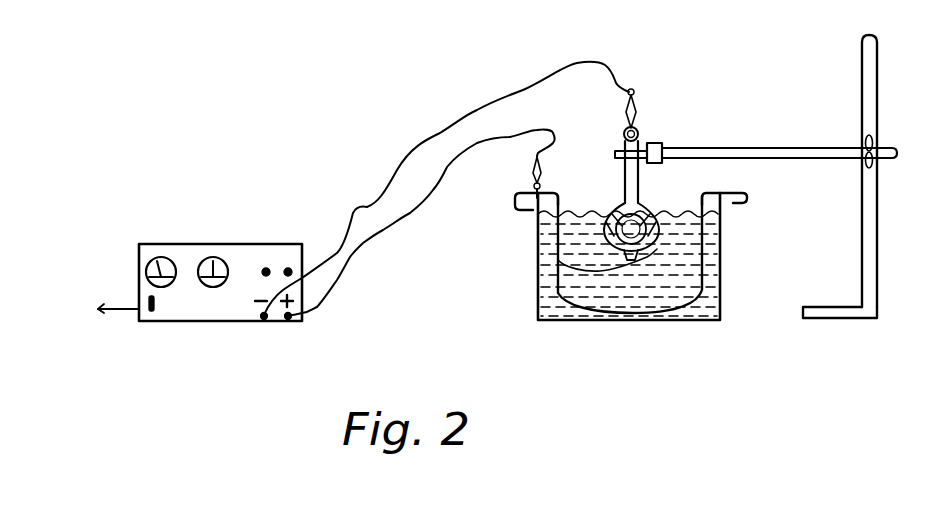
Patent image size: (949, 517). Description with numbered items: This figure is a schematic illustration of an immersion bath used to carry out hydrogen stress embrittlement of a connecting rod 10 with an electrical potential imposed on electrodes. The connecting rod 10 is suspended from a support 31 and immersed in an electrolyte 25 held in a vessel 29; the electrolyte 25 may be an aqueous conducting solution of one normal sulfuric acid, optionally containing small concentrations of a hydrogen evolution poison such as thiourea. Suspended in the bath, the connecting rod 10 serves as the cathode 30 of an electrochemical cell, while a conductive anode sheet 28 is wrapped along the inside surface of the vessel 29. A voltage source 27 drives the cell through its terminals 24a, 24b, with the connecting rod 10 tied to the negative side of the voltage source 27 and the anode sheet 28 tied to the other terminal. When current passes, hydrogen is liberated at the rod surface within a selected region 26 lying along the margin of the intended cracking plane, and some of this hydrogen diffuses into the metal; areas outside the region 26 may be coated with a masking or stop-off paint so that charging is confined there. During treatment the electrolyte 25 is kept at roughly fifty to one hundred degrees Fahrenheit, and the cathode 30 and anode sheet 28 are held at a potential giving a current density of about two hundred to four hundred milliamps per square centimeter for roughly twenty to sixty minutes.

The connecting rod 10 is at (652, 177).
The negative terminal 24a is at (264, 322).
The positive terminal of power supply 24b is at (288, 322).
The electrolyte 25 is at (655, 276).
The selected region 26 is at (538, 256).
The voltage source 27 is at (193, 322).
The conductive anode sheet 28 is at (550, 207).
The vessel 29 is at (538, 300).
The cathode 30 is at (626, 187).
The support 31 is at (878, 187).